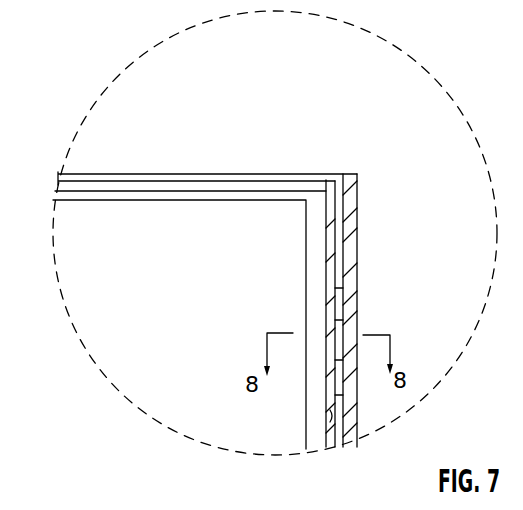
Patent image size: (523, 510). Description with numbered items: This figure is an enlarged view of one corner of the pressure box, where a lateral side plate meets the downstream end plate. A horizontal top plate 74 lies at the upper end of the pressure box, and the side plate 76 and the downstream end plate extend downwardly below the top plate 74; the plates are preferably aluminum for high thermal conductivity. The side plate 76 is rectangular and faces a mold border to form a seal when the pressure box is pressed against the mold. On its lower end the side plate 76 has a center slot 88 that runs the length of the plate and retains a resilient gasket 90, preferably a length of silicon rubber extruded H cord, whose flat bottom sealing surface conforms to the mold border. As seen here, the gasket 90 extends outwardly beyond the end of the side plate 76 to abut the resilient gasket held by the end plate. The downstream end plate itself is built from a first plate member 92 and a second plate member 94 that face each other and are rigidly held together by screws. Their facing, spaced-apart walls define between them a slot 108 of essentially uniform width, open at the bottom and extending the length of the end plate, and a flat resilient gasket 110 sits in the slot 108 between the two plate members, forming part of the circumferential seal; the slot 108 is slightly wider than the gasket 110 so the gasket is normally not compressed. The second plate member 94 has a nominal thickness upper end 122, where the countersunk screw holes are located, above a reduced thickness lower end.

The top plate 74 is at (208, 281).
The side plate 76 is at (173, 173).
The center slot 88 is at (219, 184).
The resilient gasket 90 is at (278, 183).
The first plate member 92 is at (358, 240).
The second plate member 94 is at (305, 249).
The slot 108 is at (331, 416).
The flat resilient gasket 110 is at (350, 297).
The upper end 122 is at (256, 509).